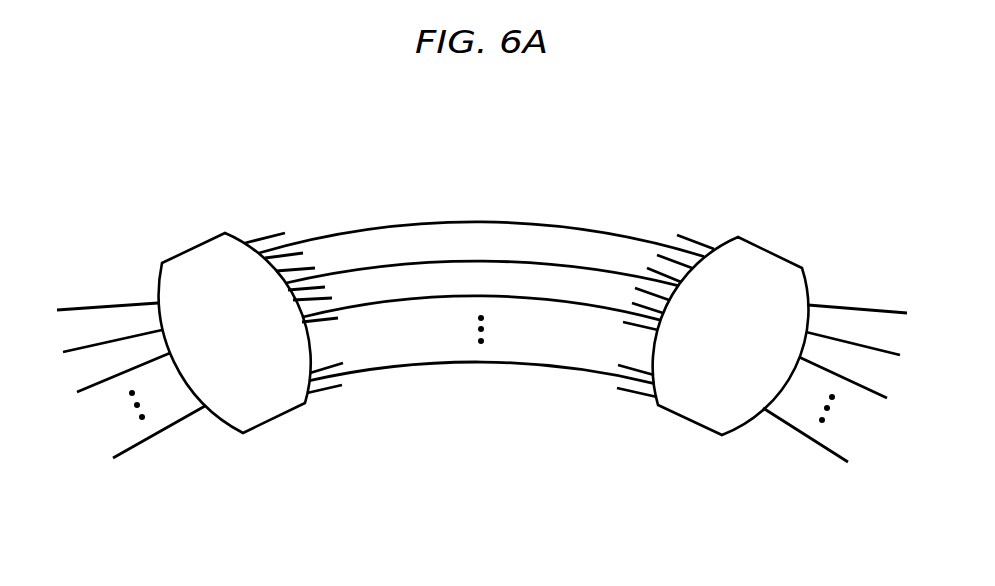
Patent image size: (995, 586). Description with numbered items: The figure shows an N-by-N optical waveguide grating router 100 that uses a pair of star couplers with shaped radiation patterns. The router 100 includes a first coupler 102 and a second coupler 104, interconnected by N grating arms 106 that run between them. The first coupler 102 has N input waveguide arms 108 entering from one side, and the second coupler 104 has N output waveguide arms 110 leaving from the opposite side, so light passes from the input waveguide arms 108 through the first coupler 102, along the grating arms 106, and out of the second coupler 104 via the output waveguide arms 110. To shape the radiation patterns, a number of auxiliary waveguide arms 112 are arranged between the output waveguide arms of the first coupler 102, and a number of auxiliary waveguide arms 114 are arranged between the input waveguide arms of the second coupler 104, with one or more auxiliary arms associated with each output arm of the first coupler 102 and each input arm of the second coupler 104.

The optical waveguide grating router 100 is at (259, 124).
The first coupler 102 is at (192, 247).
The second coupler 104 is at (771, 252).
The grating arms 106 is at (452, 222).
The input waveguide arms 108 is at (115, 306).
The output waveguide arms 110 is at (853, 308).
The auxiliary waveguide arms 112 is at (263, 240).
The auxiliary waveguide arms 114 is at (697, 242).